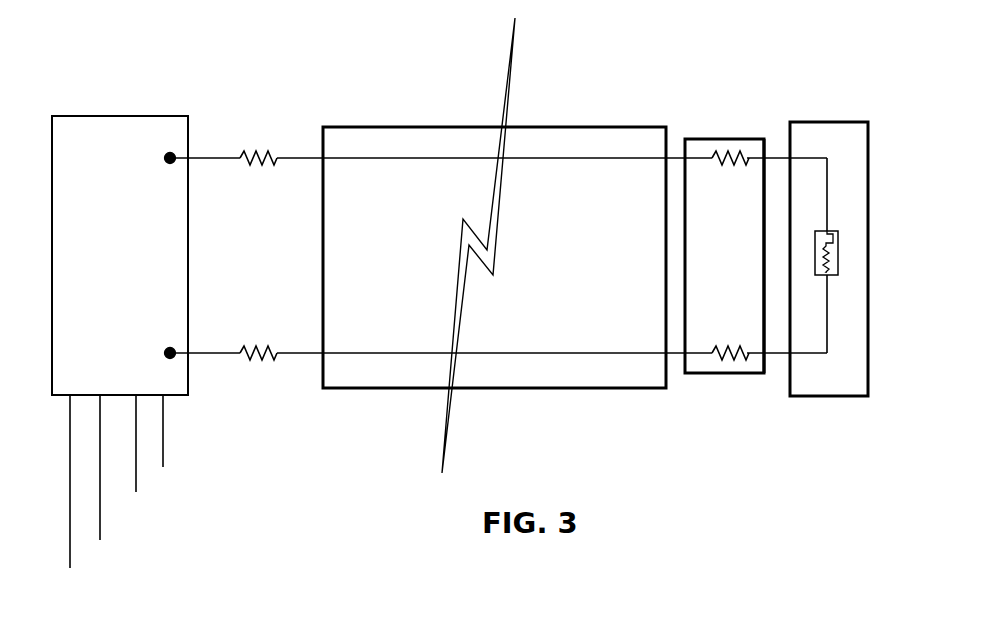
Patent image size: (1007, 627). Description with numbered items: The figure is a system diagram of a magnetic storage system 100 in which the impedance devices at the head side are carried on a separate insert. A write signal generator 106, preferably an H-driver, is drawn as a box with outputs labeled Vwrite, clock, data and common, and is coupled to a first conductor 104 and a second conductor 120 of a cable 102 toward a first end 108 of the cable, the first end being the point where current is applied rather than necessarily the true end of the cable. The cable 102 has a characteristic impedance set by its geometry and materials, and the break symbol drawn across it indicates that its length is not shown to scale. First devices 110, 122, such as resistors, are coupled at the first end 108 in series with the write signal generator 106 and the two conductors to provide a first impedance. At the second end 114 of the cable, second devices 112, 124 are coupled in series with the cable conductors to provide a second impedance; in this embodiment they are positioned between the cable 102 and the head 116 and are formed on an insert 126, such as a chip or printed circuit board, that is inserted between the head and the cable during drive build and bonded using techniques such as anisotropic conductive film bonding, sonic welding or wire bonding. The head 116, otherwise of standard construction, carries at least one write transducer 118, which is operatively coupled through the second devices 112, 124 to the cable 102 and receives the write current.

The magnetic storage system 100 is at (124, 99).
The cable 102 is at (441, 127).
The first conductor 104 is at (542, 157).
The write signal generator 106 is at (72, 116).
The first end 108 is at (347, 110).
The first device 110 is at (250, 154).
The second device 112 is at (727, 138).
The second end 114 is at (640, 110).
The head 116 is at (837, 122).
The write transducer 118 is at (840, 253).
The second conductor 120 is at (547, 353).
The first device 122 is at (250, 362).
The second device 124 is at (732, 355).
The insert 126 is at (765, 138).